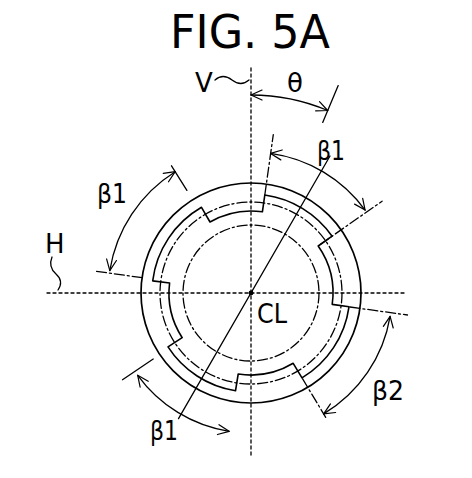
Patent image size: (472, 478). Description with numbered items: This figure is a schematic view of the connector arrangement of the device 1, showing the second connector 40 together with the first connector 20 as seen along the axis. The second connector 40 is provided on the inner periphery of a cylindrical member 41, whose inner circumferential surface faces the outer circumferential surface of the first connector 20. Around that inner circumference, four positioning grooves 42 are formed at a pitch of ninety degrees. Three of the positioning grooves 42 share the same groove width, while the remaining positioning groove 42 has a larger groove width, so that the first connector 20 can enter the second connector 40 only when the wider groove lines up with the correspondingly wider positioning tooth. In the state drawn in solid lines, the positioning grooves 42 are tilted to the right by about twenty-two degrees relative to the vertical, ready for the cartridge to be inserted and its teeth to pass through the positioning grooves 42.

The device 1 is at (388, 122).
The second connector 40 is at (112, 119).
The cylindrical member 41 is at (352, 237).
The positioning groove 42 is at (260, 195).
The first connector 20 is at (251, 293).